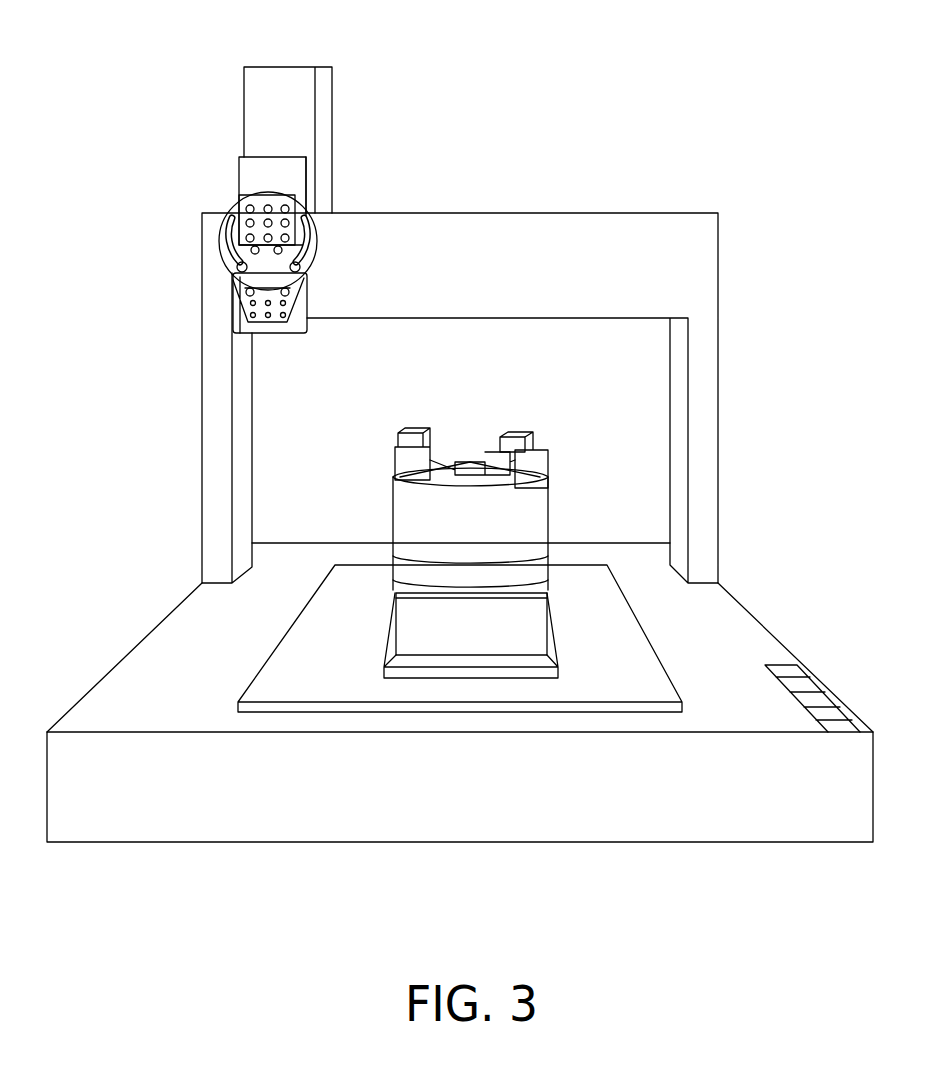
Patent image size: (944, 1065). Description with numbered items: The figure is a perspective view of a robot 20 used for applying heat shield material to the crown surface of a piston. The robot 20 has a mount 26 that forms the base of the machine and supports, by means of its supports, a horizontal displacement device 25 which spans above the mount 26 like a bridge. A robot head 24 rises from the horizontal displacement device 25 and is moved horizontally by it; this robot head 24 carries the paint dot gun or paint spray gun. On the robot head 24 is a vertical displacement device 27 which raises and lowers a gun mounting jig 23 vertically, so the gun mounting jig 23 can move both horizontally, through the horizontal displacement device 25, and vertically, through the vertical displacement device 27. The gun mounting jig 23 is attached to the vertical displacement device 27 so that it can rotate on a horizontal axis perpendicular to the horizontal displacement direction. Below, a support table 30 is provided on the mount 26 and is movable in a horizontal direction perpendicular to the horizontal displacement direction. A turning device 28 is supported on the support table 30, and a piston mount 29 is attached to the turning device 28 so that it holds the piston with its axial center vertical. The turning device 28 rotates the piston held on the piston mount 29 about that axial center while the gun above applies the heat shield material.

The robot 20 is at (460, 449).
The gun mounting jig 23 is at (228, 213).
The robot head 24 is at (332, 113).
The horizontal displacement device 25 is at (548, 213).
The mount 26 is at (752, 616).
The vertical displacement device 27 is at (268, 165).
The turning device 28 is at (472, 632).
The piston mount 29 is at (405, 508).
The support table 30 is at (580, 582).